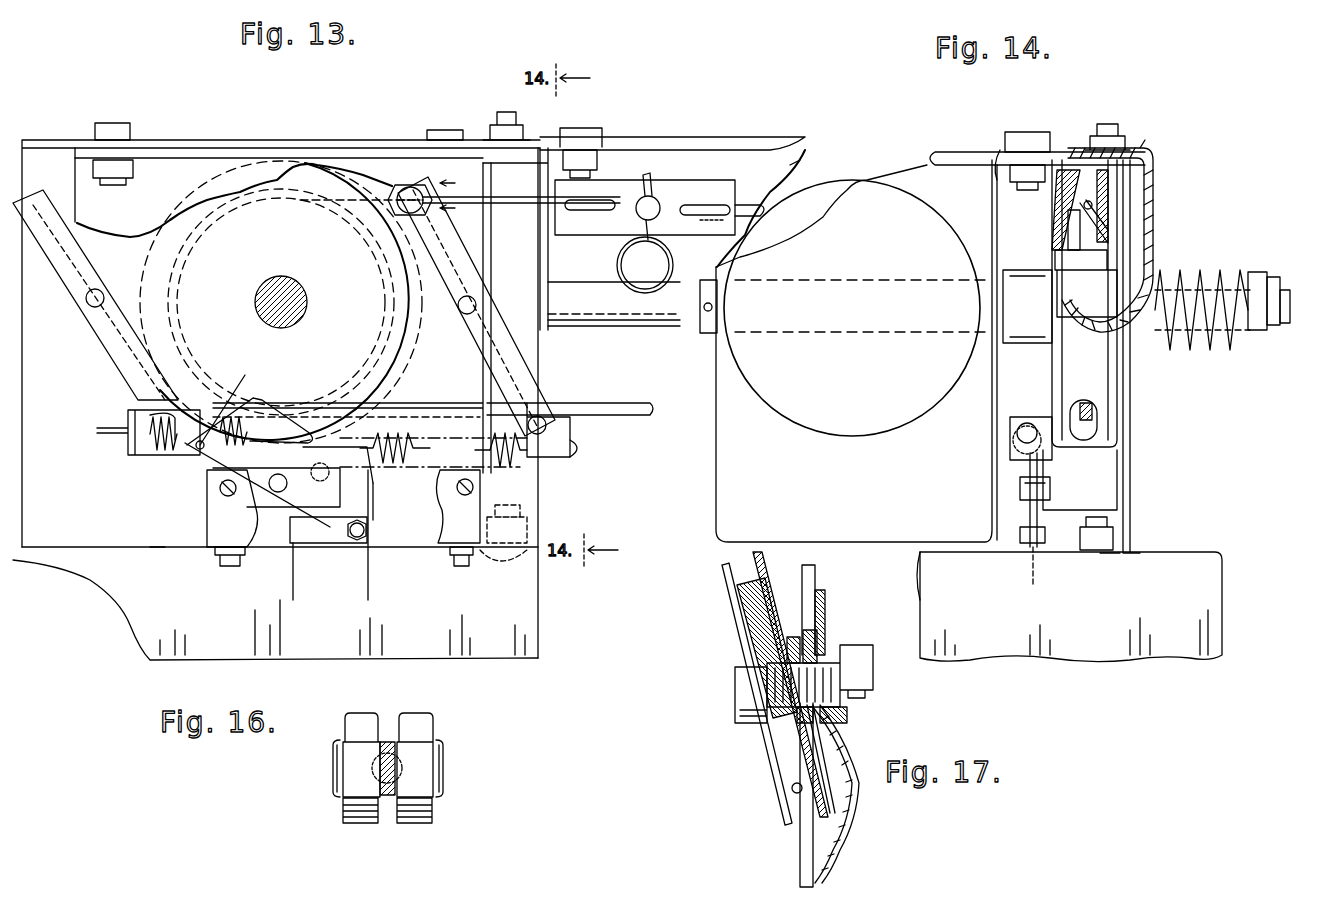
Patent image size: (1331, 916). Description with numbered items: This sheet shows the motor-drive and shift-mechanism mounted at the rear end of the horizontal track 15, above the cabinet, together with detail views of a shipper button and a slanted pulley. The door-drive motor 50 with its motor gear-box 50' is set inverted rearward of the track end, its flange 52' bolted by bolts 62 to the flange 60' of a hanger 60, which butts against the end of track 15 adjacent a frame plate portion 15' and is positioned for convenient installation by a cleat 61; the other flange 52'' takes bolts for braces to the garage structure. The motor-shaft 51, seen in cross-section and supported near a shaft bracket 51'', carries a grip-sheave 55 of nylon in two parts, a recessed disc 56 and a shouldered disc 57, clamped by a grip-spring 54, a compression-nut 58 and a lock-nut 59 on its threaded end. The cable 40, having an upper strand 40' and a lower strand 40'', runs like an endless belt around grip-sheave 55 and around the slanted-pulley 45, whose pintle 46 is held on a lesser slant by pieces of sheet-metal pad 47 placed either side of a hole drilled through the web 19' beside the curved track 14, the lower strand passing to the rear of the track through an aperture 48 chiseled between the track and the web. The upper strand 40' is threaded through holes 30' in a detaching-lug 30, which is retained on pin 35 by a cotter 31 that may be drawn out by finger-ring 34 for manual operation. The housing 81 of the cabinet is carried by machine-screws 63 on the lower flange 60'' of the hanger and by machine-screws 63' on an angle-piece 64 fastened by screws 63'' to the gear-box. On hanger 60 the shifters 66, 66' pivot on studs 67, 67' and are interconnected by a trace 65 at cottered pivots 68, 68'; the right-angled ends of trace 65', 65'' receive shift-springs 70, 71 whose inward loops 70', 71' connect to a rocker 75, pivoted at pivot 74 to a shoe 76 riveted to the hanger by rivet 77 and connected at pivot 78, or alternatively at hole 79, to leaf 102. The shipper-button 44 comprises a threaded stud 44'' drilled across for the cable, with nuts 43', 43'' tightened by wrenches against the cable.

In FIG. 17, the curved track 14 is at (815, 587).
In FIG. 13, the horizontal track 15 is at (672, 187).
In FIG. 14, the horizontal track 15 is at (1130, 215).
In FIG. 13, the frame plate portion 15' is at (811, 165).
In FIG. 17, the web 19' is at (849, 728).
In FIG. 13, the detaching-lug 30 is at (646, 177).
In FIG. 13, the holes 30' is at (706, 241).
In FIG. 13, the cotter 31 is at (645, 265).
In FIG. 13, the finger-ring 34 is at (617, 288).
In FIG. 13, the pin 35 is at (652, 200).
In FIG. 13, the cable 40 is at (570, 391).
In FIG. 13, the upper strand 40' is at (538, 213).
In FIG. 14, the upper strand 40' is at (1122, 256).
In FIG. 17, the upper strand 40' is at (747, 684).
In FIG. 16, the upper strand 40' is at (392, 737).
In FIG. 13, the lower strand 40'' is at (616, 446).
In FIG. 14, the lower strand 40'' is at (1126, 417).
In FIG. 17, the lower strand 40'' is at (759, 799).
In FIG. 16, the nut 43' is at (414, 832).
In FIG. 16, the nut 43'' is at (352, 832).
In FIG. 13, the shipper-button 44 is at (410, 160).
In FIG. 16, the shipper-button 44 is at (409, 745).
In FIG. 16, the threaded stud 44'' is at (361, 768).
In FIG. 17, the slanted-pulley 45 is at (737, 620).
In FIG. 17, the pintle 46 is at (735, 683).
In FIG. 17, the sheet-metal pad 47 is at (850, 712).
In FIG. 17, the aperture 48 is at (840, 758).
In FIG. 14, the door-drive motor 50 is at (852, 326).
In FIG. 13, the motor gear-box 50' is at (279, 338).
In FIG. 14, the motor gear-box 50' is at (859, 373).
In FIG. 13, the motor-shaft 51 is at (281, 302).
In FIG. 14, the motor-shaft 51 is at (1161, 296).
In FIG. 14, the shaft bracket 51'' is at (832, 330).
In FIG. 14, the flange 52' is at (1037, 140).
In FIG. 13, the flange 52'' is at (281, 324).
In FIG. 14, the grip-spring 54 is at (1191, 270).
In FIG. 13, the grip-sheave 55 is at (252, 170).
In FIG. 14, the recessed disc 56 is at (1056, 195).
In FIG. 14, the shouldered disc 57 is at (1110, 205).
In FIG. 14, the compression-nut 58 is at (1255, 272).
In FIG. 14, the lock-nut 59 is at (1275, 276).
In FIG. 13, the hanger 60 is at (234, 170).
In FIG. 14, the hanger 60 is at (1123, 294).
In FIG. 14, the flange 60' is at (997, 139).
In FIG. 13, the lower flange 60'' is at (160, 561).
In FIG. 14, the lower flange 60'' is at (1115, 575).
In FIG. 13, the cleat 61 is at (546, 140).
In FIG. 14, the cleat 61 is at (1135, 140).
In FIG. 13, the bolt 62 is at (108, 128).
In FIG. 14, the bolt 62 is at (1040, 132).
In FIG. 13, the machine-screws 63 is at (525, 322).
In FIG. 14, the machine-screws 63 is at (1127, 313).
In FIG. 13, the machine-screws 63' is at (344, 567).
In FIG. 13, the screws 63'' is at (340, 485).
In FIG. 13, the angle-piece 64 is at (207, 504).
In FIG. 13, the trace 65 is at (352, 318).
In FIG. 13, the end of trace 65' is at (578, 430).
In FIG. 14, the end of trace 65' is at (995, 438).
In FIG. 13, the end of trace 65'' is at (139, 444).
In FIG. 13, the shifter 66 is at (457, 275).
In FIG. 13, the shifter 66' is at (95, 295).
In FIG. 13, the stud 67 is at (491, 286).
In FIG. 13, the stud 67' is at (68, 320).
In FIG. 13, the cottered pivot 68 is at (522, 400).
In FIG. 13, the cottered pivot 68' is at (129, 412).
In FIG. 13, the shift-spring 70 is at (525, 460).
In FIG. 14, the shift-spring 70 is at (994, 461).
In FIG. 13, the inward loop 70' is at (417, 416).
In FIG. 13, the shift-spring 71 is at (147, 453).
In FIG. 13, the inward loop 71' is at (274, 449).
In FIG. 13, the pivot 74 is at (274, 475).
In FIG. 14, the pivot 74 is at (1047, 486).
In FIG. 13, the rocker 75 is at (258, 404).
In FIG. 14, the rocker 75 is at (1000, 460).
In FIG. 13, the shoe 76 is at (355, 497).
In FIG. 14, the shoe 76 is at (1071, 508).
In FIG. 14, the rivet 77 is at (1132, 490).
In FIG. 13, the pivot 78 is at (350, 540).
In FIG. 14, the pivot 78 is at (1040, 560).
In FIG. 13, the hole 79 is at (212, 398).
In FIG. 13, the housing 81 is at (530, 640).
In FIG. 14, the housing 81 is at (1224, 624).
In FIG. 13, the leaf 102 is at (300, 528).
In FIG. 14, the leaf 102 is at (1025, 580).